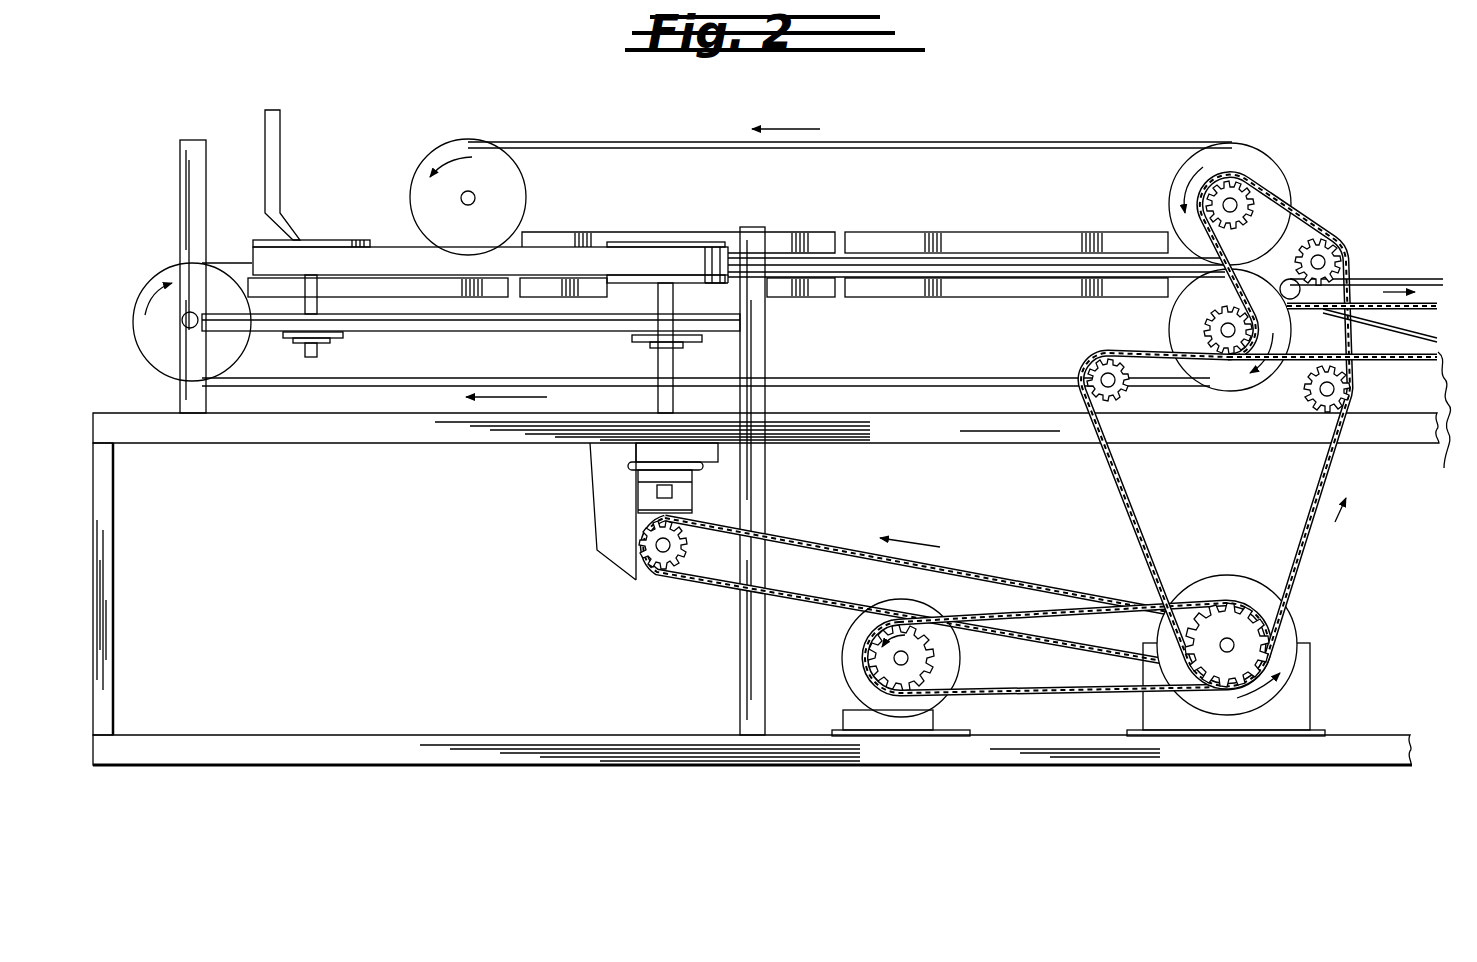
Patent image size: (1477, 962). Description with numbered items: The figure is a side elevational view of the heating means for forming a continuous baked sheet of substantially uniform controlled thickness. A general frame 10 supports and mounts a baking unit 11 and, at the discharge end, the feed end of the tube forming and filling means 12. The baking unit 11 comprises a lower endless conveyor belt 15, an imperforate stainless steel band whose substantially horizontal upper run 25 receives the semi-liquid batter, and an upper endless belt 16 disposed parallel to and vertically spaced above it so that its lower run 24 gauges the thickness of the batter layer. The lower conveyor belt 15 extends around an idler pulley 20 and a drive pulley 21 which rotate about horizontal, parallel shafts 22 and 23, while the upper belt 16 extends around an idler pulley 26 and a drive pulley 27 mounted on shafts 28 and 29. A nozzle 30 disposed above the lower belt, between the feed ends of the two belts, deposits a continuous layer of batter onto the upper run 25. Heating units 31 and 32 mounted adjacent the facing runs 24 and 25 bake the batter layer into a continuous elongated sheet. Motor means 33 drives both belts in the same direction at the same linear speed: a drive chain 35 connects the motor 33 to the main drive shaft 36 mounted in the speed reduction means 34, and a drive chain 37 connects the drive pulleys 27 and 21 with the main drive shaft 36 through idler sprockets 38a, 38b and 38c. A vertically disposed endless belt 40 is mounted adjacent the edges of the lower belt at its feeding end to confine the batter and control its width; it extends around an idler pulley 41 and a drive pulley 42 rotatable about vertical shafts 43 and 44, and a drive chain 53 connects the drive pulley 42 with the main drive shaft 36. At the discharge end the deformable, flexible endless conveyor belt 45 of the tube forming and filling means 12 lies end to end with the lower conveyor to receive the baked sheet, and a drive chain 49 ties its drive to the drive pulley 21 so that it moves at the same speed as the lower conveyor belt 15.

The general frame 10 is at (662, 735).
The baking unit 11 is at (936, 127).
The tube forming and filling means 12 is at (1419, 245).
The lower endless conveyor belt 15 is at (456, 385).
The upper endless belt 16 is at (1115, 142).
The idler pulley 20 is at (150, 287).
The drive pulley 21 is at (1243, 378).
The shaft 22 is at (186, 326).
The shaft 23 is at (1222, 330).
The lower run 24 is at (1038, 258).
The upper run 25 is at (948, 272).
The idler pulley 26 is at (468, 140).
The drive pulley 27 is at (1254, 157).
The shaft 28 is at (478, 198).
The shaft 29 is at (1240, 200).
The nozzle 30 is at (281, 140).
The heating unit 31 is at (521, 292).
The heating unit 32 is at (853, 233).
The motor means 33 is at (845, 660).
The speed reduction means 34 is at (1295, 614).
The drive chain 35 is at (1030, 698).
The main drive shaft 36 is at (1232, 640).
The drive chain 37 is at (1343, 488).
The idler sprocket 38a is at (1352, 388).
The idler sprocket 38b is at (1322, 240).
The idler sprocket 38c is at (1103, 370).
The vertically disposed endless belt 40 is at (380, 250).
The idler pulley 41 is at (314, 240).
The drive pulley 42 is at (645, 242).
The vertical shaft 43 is at (320, 353).
The vertical shaft 44 is at (660, 362).
The deformable flexible endless conveyor belt 45 is at (1386, 278).
The drive chain 49 is at (1431, 420).
The drive chain 53 is at (818, 545).